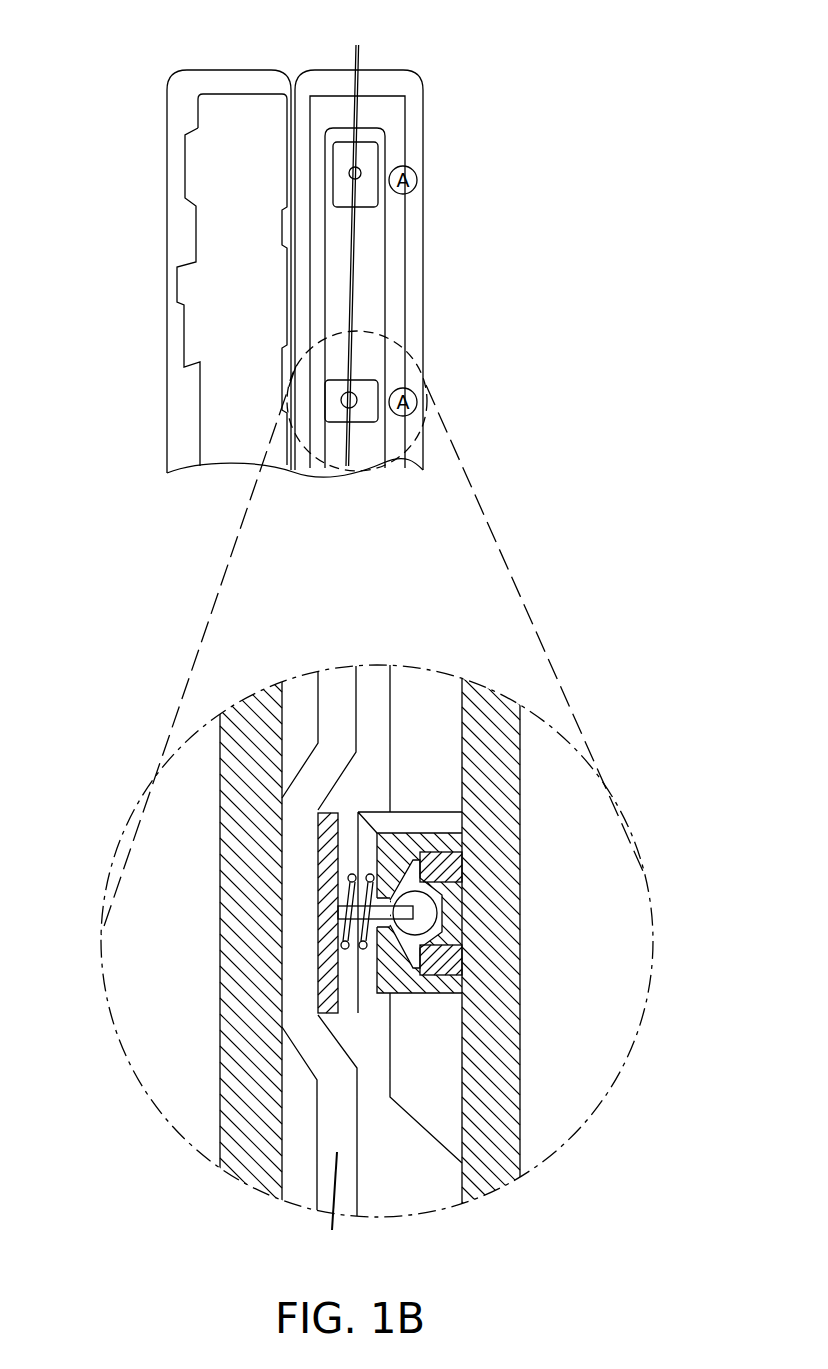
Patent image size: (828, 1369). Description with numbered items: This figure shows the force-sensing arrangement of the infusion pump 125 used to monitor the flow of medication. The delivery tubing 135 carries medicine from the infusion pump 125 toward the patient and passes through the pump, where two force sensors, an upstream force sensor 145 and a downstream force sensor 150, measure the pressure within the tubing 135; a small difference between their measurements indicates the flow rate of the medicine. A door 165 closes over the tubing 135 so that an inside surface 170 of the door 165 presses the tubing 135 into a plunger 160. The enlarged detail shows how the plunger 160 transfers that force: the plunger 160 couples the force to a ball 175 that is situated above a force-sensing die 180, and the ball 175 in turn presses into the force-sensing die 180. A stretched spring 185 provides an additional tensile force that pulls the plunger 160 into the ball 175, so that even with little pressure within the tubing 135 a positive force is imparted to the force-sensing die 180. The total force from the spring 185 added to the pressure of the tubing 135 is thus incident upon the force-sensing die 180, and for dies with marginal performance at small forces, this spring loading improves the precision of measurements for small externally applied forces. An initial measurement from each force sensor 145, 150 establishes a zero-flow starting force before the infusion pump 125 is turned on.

The infusion pump 125 is at (413, 323).
The delivery tubing 135 is at (355, 126).
The upstream force sensor 145 is at (370, 155).
The downstream force sensor 150 is at (365, 395).
The plunger 160 is at (340, 812).
The door 165 is at (227, 70).
The inside surface 170 is at (257, 204).
The ball 175 is at (428, 923).
The force-sensing die 180 is at (447, 877).
The spring 185 is at (350, 953).